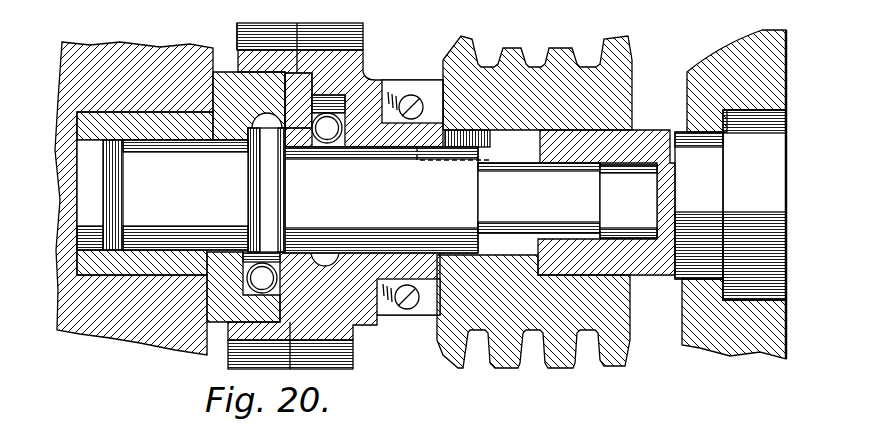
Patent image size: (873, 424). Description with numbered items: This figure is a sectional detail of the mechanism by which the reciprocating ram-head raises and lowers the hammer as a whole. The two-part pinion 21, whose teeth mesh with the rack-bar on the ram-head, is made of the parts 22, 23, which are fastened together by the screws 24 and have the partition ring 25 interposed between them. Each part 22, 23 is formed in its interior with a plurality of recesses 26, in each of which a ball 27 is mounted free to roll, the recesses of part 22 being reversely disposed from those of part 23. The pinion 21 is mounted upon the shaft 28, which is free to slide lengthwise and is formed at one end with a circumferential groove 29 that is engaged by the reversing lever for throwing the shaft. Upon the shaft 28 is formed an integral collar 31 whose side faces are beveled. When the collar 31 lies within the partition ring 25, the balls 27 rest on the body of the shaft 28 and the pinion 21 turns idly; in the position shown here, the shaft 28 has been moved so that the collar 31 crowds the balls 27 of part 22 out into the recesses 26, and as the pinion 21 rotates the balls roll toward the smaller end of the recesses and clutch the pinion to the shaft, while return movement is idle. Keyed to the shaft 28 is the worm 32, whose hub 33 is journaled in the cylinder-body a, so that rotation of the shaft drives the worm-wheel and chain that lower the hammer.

The pinion 21 is at (295, 185).
The pinion part 22 is at (237, 31).
The pinion part 23 is at (363, 47).
The screws 24 is at (387, 77).
The partition ring 25 is at (365, 72).
The recesses 26 is at (262, 285).
The ball 27 is at (203, 308).
The shaft 28 is at (534, 205).
The circumferential groove 29 is at (118, 183).
The collar 31 is at (266, 190).
The worm 32 is at (523, 90).
The hub 33 is at (643, 143).
The cylinder-body a is at (715, 65).